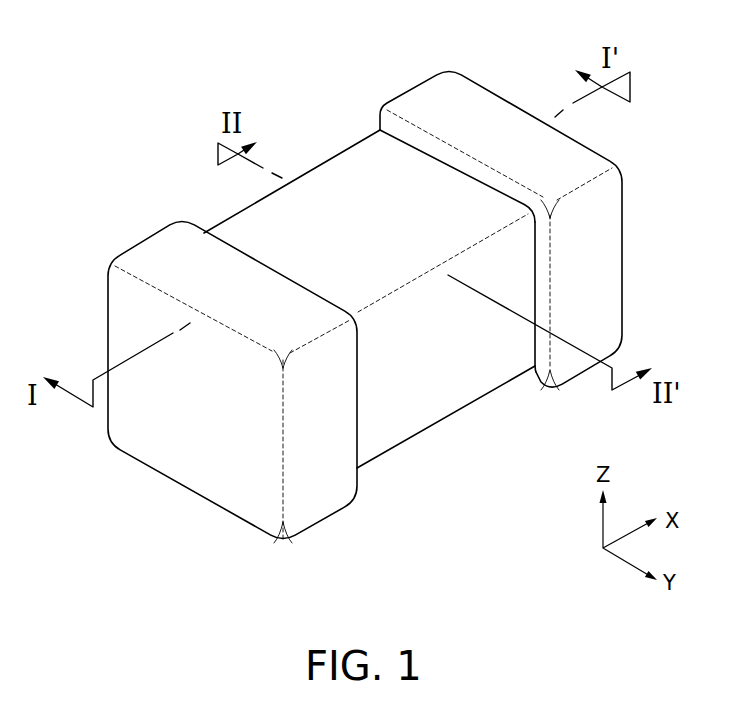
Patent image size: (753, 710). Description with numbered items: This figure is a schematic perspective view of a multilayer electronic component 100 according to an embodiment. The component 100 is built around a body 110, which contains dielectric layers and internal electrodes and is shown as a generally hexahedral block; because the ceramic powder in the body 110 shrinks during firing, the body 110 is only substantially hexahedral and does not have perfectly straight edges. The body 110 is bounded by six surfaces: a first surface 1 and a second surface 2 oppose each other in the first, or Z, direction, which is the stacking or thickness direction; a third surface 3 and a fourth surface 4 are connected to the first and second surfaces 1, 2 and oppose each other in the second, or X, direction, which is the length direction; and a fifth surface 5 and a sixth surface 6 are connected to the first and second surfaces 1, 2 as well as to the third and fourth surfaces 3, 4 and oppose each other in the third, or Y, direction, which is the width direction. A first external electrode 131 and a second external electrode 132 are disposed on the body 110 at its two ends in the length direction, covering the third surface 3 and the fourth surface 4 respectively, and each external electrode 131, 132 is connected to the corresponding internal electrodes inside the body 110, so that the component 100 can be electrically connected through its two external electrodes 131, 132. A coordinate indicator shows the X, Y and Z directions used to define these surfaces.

The multilayer electronic component 100 is at (150, 38).
The body 110 is at (245, 237).
The first external electrode 131 is at (168, 252).
The second external electrode 132 is at (423, 107).
The first surface 1 is at (407, 390).
The second surface 2 is at (382, 187).
The third surface 3 is at (203, 437).
The fourth surface 4 is at (572, 243).
The fifth surface 5 is at (462, 358).
The sixth surface 6 is at (328, 208).